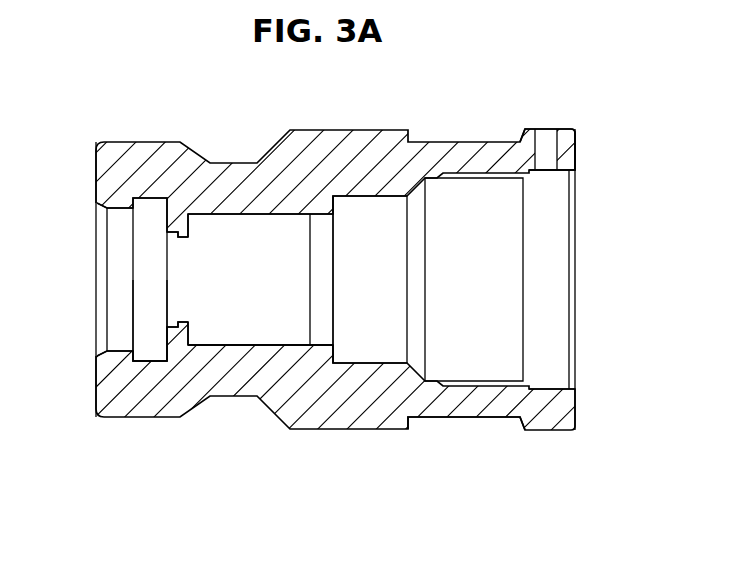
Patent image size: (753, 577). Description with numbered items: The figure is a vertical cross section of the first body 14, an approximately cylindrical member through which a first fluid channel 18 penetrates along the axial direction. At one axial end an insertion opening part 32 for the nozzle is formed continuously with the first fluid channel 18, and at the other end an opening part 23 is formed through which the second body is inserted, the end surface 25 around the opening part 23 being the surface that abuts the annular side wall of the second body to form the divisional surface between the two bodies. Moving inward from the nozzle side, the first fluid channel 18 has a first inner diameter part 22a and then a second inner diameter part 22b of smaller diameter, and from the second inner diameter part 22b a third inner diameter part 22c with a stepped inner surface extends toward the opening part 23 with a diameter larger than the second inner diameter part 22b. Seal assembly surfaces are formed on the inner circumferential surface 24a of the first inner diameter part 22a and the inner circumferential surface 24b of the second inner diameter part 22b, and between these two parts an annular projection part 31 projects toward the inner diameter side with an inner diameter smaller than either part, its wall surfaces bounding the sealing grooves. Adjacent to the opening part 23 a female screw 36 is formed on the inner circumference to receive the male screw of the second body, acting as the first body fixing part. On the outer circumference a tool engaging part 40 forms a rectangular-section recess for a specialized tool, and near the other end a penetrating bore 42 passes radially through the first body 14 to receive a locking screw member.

The first body 14 is at (435, 93).
The first fluid channel 18 is at (148, 294).
The first inner diameter part 22a is at (142, 209).
The second inner diameter part 22b is at (256, 217).
The third inner diameter part 22c is at (357, 198).
The opening part 23 is at (549, 389).
The inner circumferential surface 24a is at (150, 350).
The inner circumferential surface 24b is at (238, 332).
The end surface 25 is at (577, 150).
The annular projection part 31 is at (175, 248).
The insertion opening part 32 is at (97, 352).
The female screw 36 is at (475, 184).
The tool engaging part 40 is at (414, 419).
The penetrating bore 42 is at (545, 129).